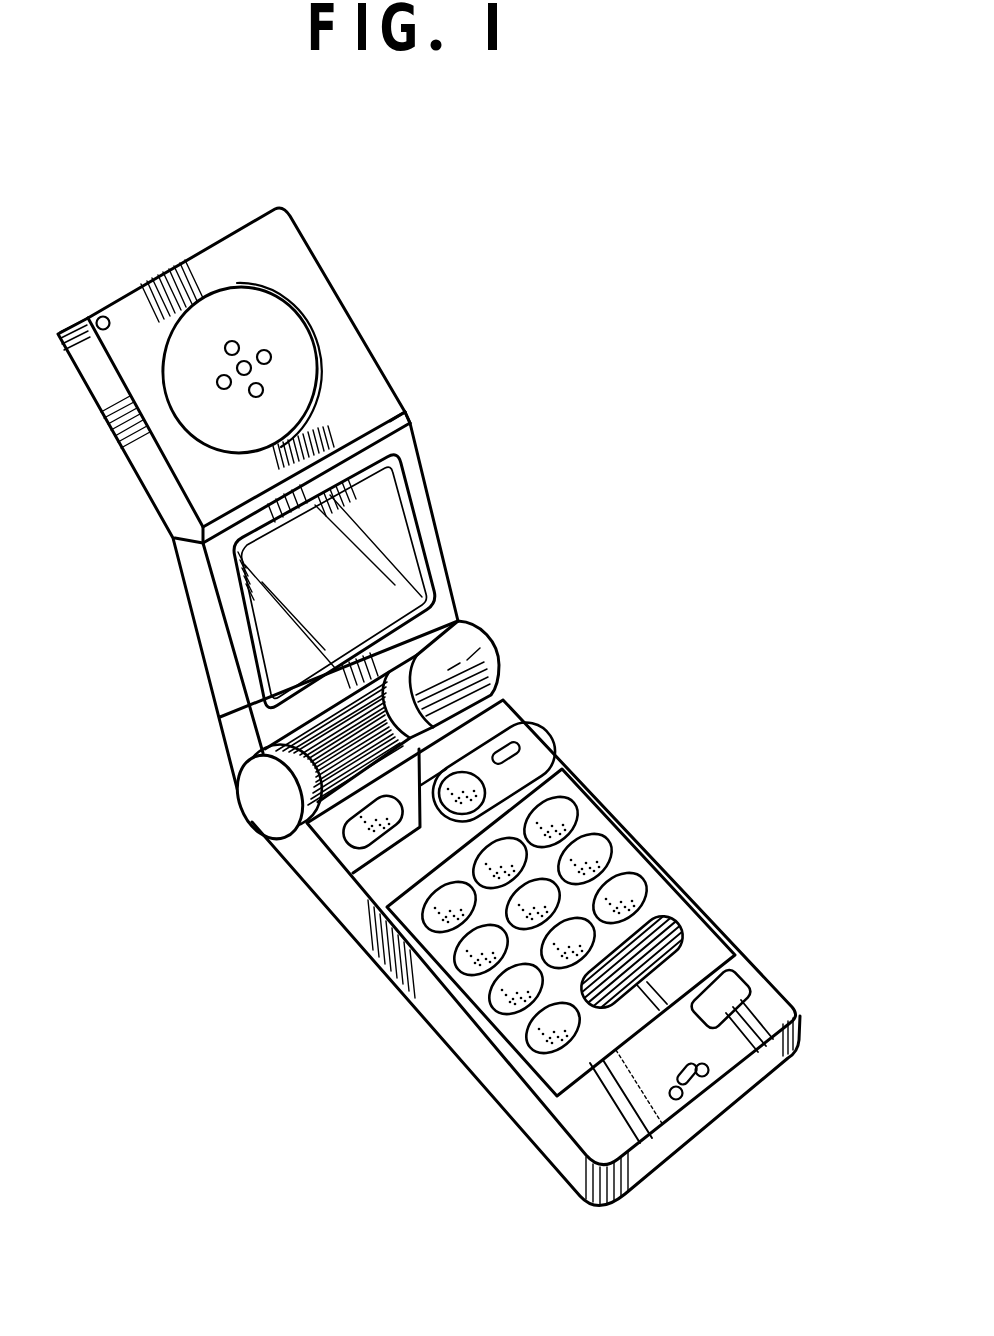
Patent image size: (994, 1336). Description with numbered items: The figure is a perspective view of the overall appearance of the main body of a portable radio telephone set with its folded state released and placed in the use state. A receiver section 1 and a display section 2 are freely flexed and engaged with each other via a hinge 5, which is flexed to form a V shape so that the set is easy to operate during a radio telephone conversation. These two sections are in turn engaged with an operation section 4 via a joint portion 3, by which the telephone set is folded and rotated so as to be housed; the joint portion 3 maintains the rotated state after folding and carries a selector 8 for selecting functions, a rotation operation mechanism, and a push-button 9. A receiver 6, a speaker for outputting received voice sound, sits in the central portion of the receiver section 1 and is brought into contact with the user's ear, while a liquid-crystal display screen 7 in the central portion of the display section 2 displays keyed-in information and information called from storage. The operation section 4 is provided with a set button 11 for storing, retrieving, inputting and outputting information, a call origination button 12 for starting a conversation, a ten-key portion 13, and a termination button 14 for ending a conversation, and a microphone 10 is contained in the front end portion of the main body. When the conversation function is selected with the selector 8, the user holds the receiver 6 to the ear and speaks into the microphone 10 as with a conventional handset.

The receiver section 1 is at (256, 200).
The display section 2 is at (459, 557).
The joint portion 3 is at (510, 655).
The operation section 4 is at (733, 915).
The hinge 5 is at (404, 413).
The receiver 6 is at (280, 338).
The liquid-crystal display screen 7 is at (252, 573).
The selector 8 is at (313, 712).
The push-button 9 is at (268, 806).
The microphone 10 is at (670, 1081).
The set button 11 is at (372, 840).
The call origination button 12 is at (523, 763).
The ten-key portion 13 is at (620, 860).
The termination button 14 is at (738, 980).